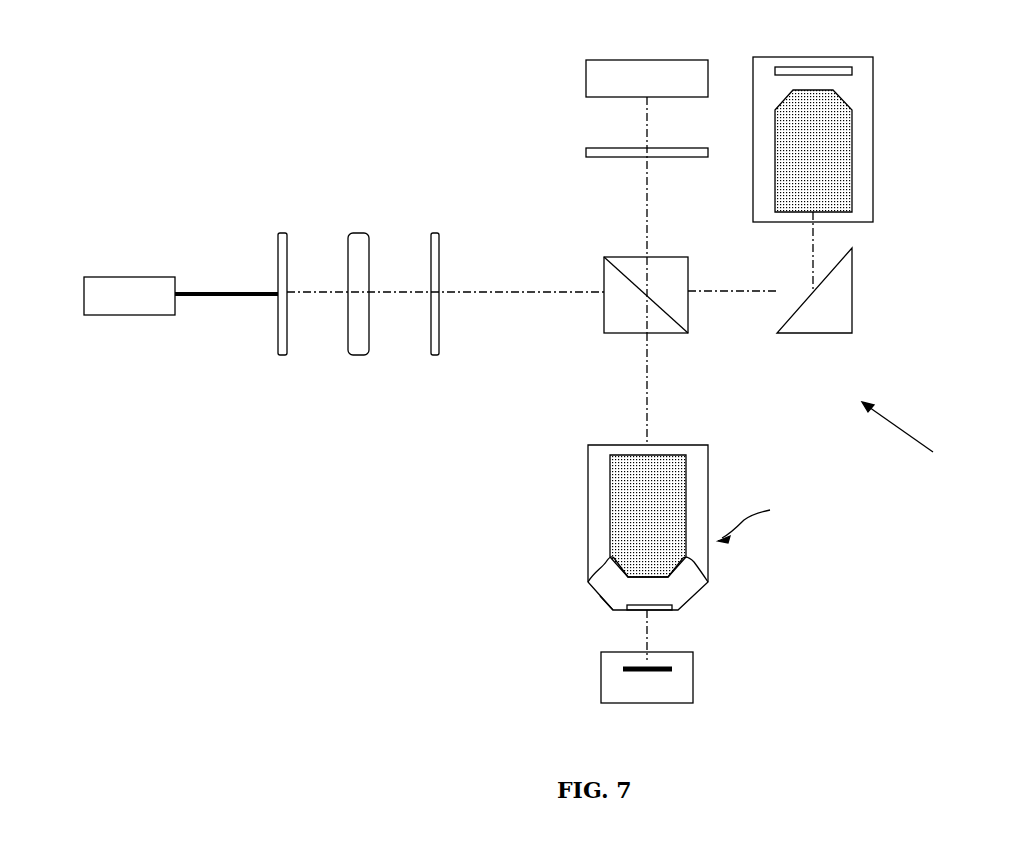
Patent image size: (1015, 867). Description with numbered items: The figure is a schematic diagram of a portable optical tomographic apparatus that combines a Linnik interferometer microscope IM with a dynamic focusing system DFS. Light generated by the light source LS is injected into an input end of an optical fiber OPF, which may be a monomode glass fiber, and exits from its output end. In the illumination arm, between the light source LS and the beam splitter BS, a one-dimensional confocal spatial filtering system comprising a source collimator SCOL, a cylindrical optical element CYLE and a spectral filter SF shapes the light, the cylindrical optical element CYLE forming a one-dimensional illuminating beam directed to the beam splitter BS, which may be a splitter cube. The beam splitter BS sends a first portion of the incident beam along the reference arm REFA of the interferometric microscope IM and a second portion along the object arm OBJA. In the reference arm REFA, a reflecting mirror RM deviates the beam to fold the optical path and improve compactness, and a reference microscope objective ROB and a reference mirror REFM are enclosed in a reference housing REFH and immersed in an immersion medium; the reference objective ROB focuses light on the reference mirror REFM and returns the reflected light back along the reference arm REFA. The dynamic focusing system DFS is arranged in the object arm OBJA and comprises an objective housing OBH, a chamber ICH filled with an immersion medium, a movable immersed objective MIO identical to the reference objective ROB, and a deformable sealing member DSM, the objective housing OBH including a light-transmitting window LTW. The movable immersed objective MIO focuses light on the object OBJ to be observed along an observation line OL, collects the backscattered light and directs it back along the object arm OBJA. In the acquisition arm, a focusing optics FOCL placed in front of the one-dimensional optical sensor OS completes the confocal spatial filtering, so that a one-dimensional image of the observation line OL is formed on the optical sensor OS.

The light source LS is at (130, 276).
The optical fiber OPF is at (236, 298).
The source collimator SCOL is at (283, 356).
The cylindrical optical element CYLE is at (356, 240).
The spectral filter SF is at (433, 357).
The one-dimensional optical sensor OS is at (650, 60).
The focusing optics FOCL is at (586, 151).
The beam splitter BS is at (604, 333).
The reference arm REFA is at (720, 292).
The reflecting mirror RM is at (853, 291).
The reference housing REFH is at (873, 220).
The reference mirror REFM is at (850, 67).
The reference microscope objective ROB is at (852, 172).
The Linnik interferometer microscope IM is at (910, 439).
The object arm OBJA is at (647, 385).
The objective housing OBH is at (708, 487).
The movable immersed objective MIO is at (608, 478).
The deformable sealing member DSM is at (694, 566).
The dynamic focusing system DFS is at (763, 523).
The chamber ICH is at (600, 600).
The light-transmitting window LTW is at (611, 610).
The object OBJ is at (693, 662).
The observation line OL is at (672, 670).